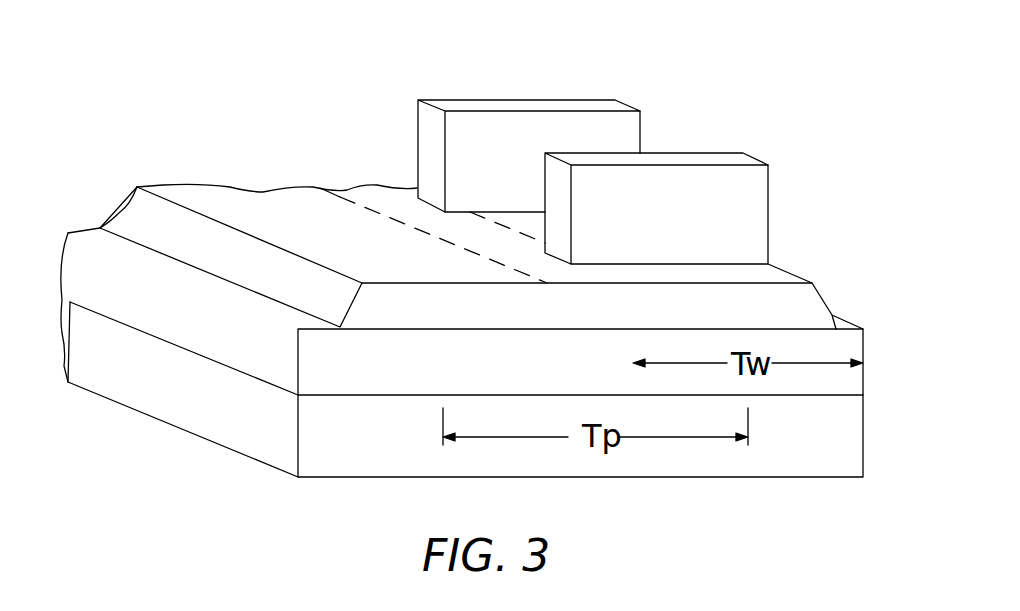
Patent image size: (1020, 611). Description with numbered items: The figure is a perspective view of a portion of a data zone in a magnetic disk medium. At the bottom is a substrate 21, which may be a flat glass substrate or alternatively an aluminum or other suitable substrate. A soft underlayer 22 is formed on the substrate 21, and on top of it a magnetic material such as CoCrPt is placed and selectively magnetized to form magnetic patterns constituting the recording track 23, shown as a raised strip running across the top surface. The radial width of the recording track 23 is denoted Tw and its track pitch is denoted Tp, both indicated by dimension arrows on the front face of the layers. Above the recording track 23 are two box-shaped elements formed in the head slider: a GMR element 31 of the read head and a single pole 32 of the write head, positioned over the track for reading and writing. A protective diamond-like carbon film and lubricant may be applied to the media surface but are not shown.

The substrate 21 is at (863, 430).
The soft underlayer 22 is at (863, 347).
The recording track 23 is at (247, 203).
The GMR element 31 is at (578, 105).
The single pole 32 is at (705, 160).